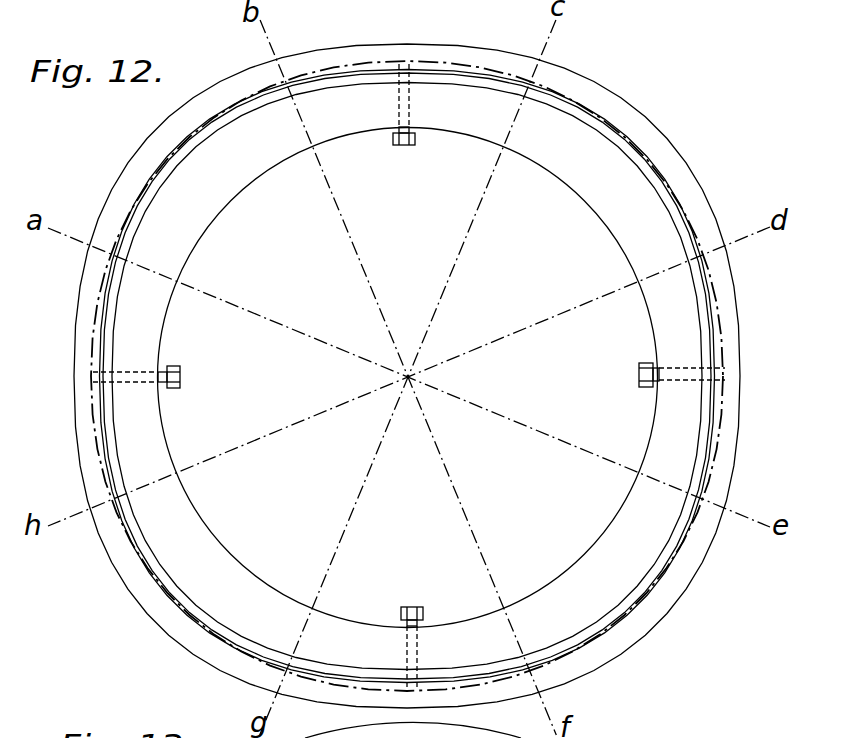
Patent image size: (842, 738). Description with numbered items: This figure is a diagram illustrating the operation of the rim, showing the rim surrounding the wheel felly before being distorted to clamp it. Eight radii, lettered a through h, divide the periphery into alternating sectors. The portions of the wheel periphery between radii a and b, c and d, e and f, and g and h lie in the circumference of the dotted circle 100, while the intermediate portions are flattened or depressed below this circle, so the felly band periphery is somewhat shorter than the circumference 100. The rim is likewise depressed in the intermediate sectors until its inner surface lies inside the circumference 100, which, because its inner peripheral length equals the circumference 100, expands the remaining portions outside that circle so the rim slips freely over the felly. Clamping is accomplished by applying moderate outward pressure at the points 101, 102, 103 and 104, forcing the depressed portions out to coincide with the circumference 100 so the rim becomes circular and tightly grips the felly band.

The dotted circle 100 is at (95, 437).
The pressure point 101 is at (95, 377).
The pressure point 102 is at (404, 63).
The pressure point 103 is at (724, 374).
The pressure point 104 is at (413, 693).